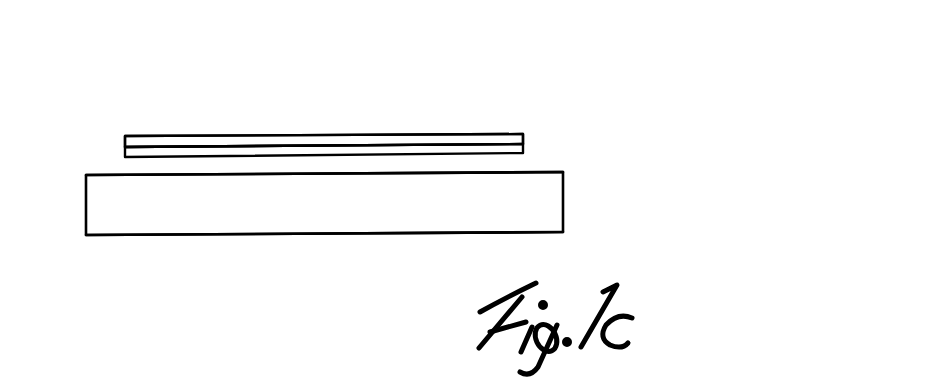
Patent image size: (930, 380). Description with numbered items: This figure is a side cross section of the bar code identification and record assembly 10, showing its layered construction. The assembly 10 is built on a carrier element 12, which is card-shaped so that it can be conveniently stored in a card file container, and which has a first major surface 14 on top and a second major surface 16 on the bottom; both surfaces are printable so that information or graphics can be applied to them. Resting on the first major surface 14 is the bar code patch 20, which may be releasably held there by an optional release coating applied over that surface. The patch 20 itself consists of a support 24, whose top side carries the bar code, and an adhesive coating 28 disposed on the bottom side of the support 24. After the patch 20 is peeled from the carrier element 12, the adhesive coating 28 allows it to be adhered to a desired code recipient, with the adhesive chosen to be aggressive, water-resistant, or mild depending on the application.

The bar code identification and record assembly 10 is at (175, 68).
The carrier element 12 is at (588, 205).
The first major surface 14 is at (97, 175).
The second major surface 16 is at (301, 262).
The bar code patch 20 is at (543, 95).
The support 24 is at (292, 113).
The adhesive coating 28 is at (432, 115).